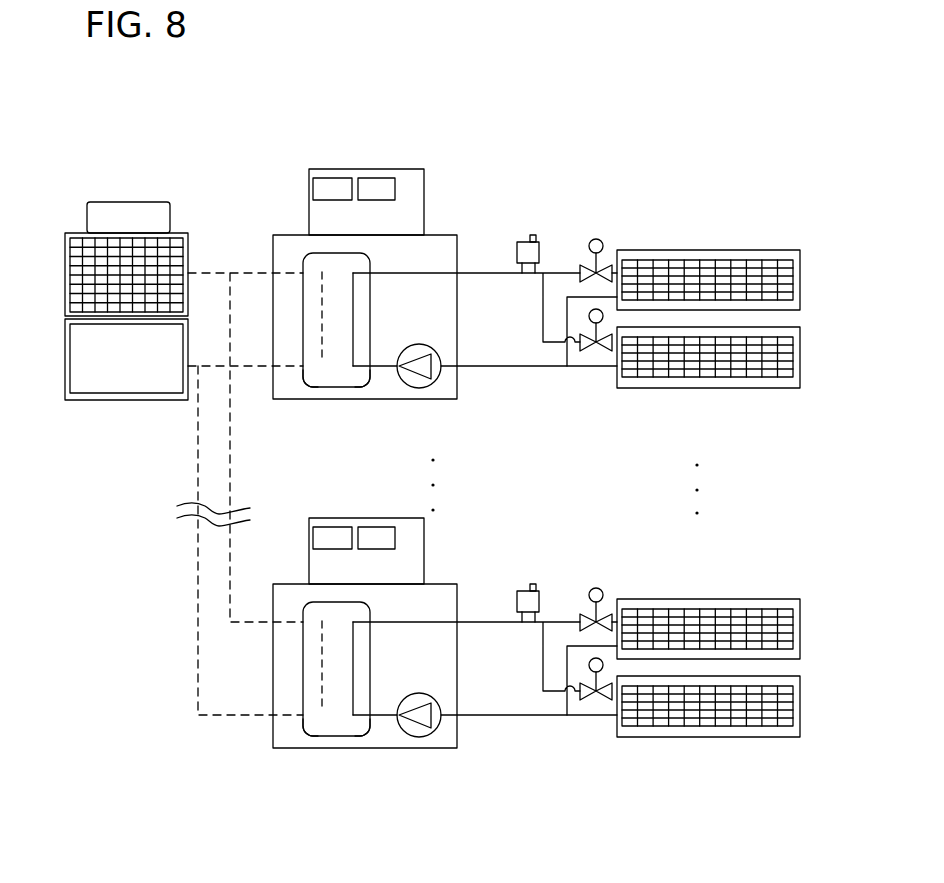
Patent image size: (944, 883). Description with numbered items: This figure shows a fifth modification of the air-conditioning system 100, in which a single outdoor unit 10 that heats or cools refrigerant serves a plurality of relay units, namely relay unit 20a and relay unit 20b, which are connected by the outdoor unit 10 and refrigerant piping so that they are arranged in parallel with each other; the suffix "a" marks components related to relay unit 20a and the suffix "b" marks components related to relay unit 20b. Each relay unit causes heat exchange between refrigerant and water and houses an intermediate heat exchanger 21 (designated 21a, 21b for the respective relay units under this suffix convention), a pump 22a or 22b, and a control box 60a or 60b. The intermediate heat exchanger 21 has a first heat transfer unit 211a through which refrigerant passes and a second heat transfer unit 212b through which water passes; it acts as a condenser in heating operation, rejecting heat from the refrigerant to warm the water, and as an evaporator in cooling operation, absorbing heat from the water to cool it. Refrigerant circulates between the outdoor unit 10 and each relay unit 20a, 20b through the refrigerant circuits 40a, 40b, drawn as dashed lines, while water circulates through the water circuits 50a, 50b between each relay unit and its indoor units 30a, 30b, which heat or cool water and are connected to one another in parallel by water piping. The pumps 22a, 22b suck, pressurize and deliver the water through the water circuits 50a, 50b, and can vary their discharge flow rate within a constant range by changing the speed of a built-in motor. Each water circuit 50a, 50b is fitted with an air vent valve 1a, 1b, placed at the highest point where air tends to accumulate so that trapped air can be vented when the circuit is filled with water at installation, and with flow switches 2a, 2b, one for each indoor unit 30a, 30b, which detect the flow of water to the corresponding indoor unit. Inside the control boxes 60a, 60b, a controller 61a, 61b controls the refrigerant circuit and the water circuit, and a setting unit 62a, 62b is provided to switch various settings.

The air-conditioning system 100 is at (803, 190).
The outdoor unit 10 is at (172, 215).
The air vent valve 1a is at (535, 234).
The air vent valve 1b is at (535, 583).
The flow switch 2a is at (607, 260).
The flow switch 2b is at (607, 609).
The relay unit 20a is at (460, 247).
The relay unit 20b is at (460, 596).
The intermediate heat exchanger 21 is at (331, 392).
The intermediate heat exchanger 21a is at (313, 719).
The intermediate heat exchanger 21b is at (360, 719).
The first heat transfer unit 211a is at (313, 370).
The second heat transfer unit 212b is at (360, 370).
The pump 22a is at (419, 388).
The pump 22b is at (419, 737).
The indoor unit 30a is at (737, 250).
The indoor unit 30b is at (737, 599).
The refrigerant circuit 40a is at (257, 372).
The refrigerant circuit 40b is at (236, 717).
The water circuit 50a is at (518, 368).
The water circuit 50b is at (518, 717).
The control box 60a is at (425, 190).
The control box 60b is at (425, 539).
The controller 61a is at (330, 174).
The controller 61b is at (330, 523).
The setting unit 62a is at (375, 174).
The setting unit 62b is at (375, 523).